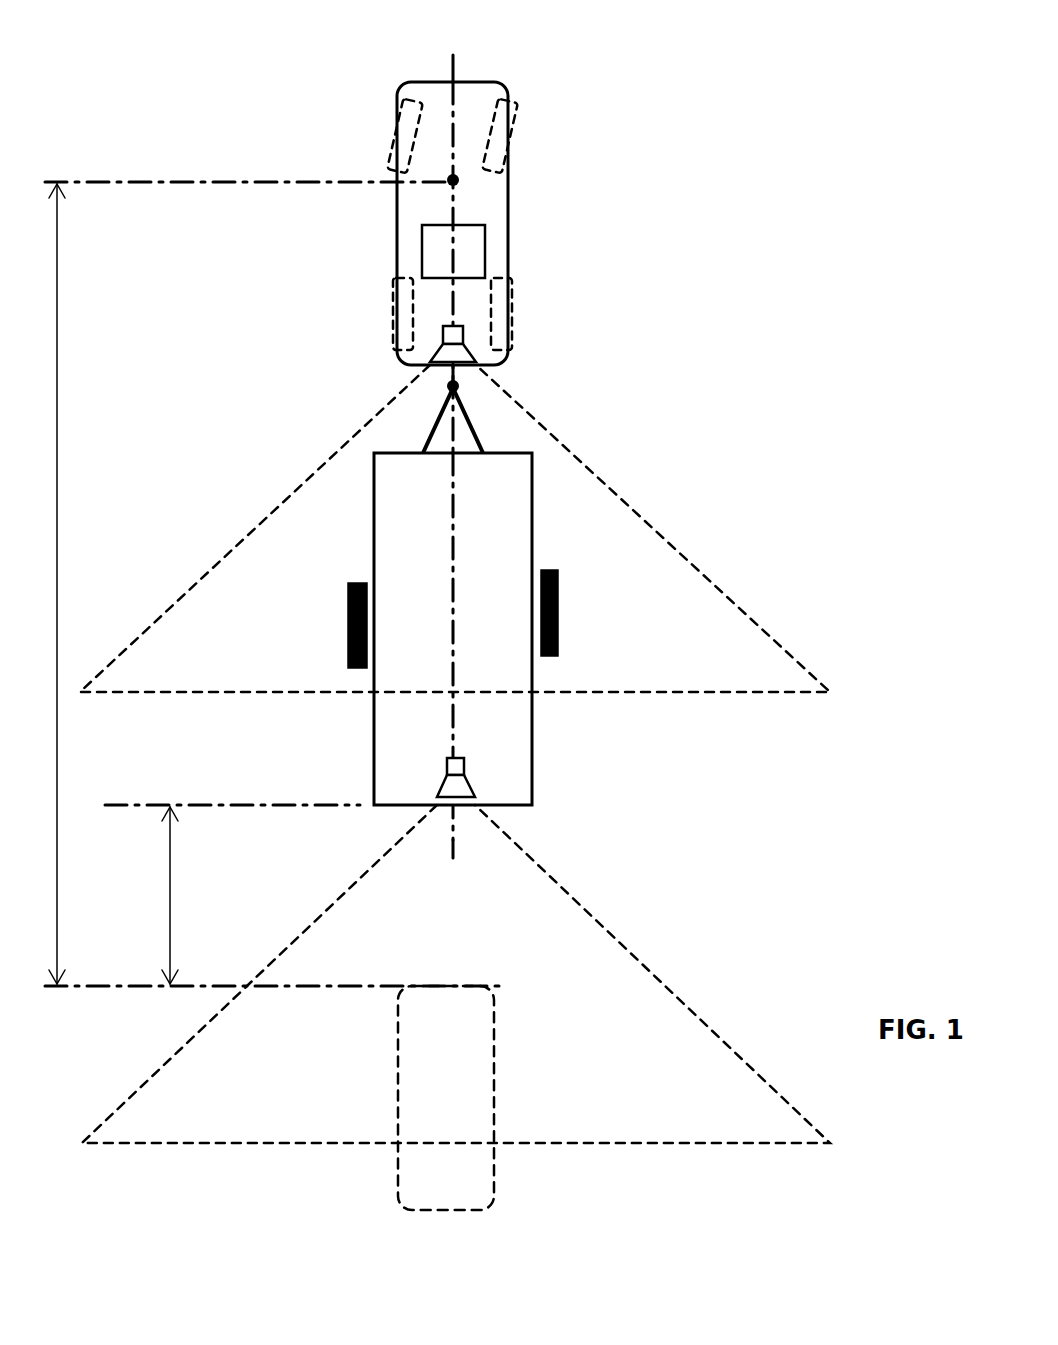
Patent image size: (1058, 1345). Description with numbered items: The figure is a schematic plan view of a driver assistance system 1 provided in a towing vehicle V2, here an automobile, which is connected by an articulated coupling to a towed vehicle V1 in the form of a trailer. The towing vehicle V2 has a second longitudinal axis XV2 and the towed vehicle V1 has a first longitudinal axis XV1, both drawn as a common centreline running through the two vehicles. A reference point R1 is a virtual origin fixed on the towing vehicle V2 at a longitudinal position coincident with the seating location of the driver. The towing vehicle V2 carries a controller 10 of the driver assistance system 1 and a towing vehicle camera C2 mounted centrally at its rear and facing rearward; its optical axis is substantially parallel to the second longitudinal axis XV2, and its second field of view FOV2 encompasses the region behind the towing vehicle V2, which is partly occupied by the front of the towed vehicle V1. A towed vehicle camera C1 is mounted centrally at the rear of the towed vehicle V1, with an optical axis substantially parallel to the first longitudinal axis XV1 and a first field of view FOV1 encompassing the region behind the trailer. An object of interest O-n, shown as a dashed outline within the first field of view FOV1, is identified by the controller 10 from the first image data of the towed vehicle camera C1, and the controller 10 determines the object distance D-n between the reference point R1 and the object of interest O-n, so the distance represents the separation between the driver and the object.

The driver assistance system 1 is at (815, 192).
The controller 10 is at (453, 251).
The towed vehicle V1 is at (553, 477).
The towing vehicle V2 is at (548, 88).
The towed vehicle camera C1 is at (462, 776).
The towing vehicle camera C2 is at (463, 349).
The reference point R1 is at (458, 182).
The first field of view FOV1 is at (456, 974).
The second field of view FOV2 is at (455, 528).
The object of interest O-n is at (507, 1063).
The object distance D-n is at (272, 584).
The first longitudinal axis XV1 is at (481, 430).
The second longitudinal axis XV2 is at (480, 872).